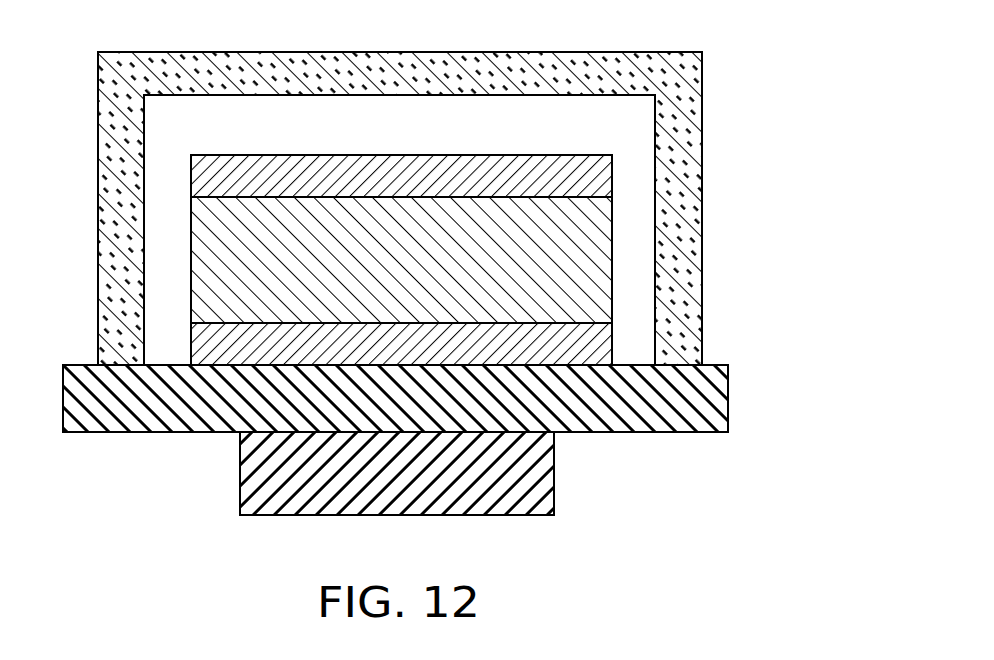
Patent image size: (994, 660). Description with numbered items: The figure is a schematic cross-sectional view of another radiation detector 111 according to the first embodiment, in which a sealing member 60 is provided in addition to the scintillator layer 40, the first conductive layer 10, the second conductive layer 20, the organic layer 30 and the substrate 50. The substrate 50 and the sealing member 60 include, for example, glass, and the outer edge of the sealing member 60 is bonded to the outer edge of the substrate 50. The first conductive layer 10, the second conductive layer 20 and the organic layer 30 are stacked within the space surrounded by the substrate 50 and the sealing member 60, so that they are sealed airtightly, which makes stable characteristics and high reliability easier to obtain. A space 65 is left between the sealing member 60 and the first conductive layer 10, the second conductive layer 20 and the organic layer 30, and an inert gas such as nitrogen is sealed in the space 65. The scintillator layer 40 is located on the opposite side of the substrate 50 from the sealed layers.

The radiation detector 111 is at (799, 79).
The space 65 is at (592, 117).
The sealing member 60 is at (682, 145).
The first conductive layer 10 is at (595, 177).
The organic layer 30 is at (582, 266).
The second conductive layer 20 is at (587, 343).
The substrate 50 is at (692, 398).
The scintillator layer 40 is at (543, 485).